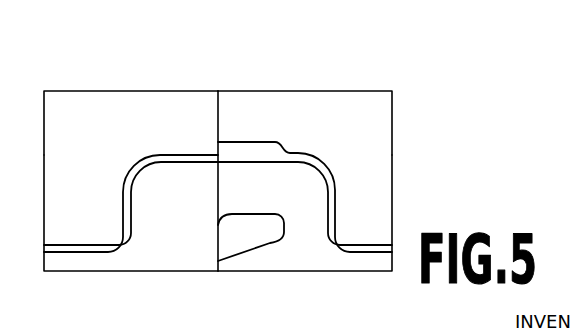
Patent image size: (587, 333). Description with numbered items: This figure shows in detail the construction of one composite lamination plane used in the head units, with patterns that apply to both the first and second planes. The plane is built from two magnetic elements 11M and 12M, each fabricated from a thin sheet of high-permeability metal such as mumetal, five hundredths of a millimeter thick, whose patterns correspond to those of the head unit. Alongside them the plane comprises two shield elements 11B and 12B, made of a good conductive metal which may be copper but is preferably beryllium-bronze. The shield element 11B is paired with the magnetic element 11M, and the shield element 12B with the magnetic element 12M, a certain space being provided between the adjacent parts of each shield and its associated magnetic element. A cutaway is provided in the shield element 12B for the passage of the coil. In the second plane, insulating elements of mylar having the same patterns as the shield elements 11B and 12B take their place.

The shield element 11B is at (145, 91).
The shield element 12B is at (300, 91).
The magnetic element 11M is at (87, 271).
The magnetic element 12M is at (308, 271).